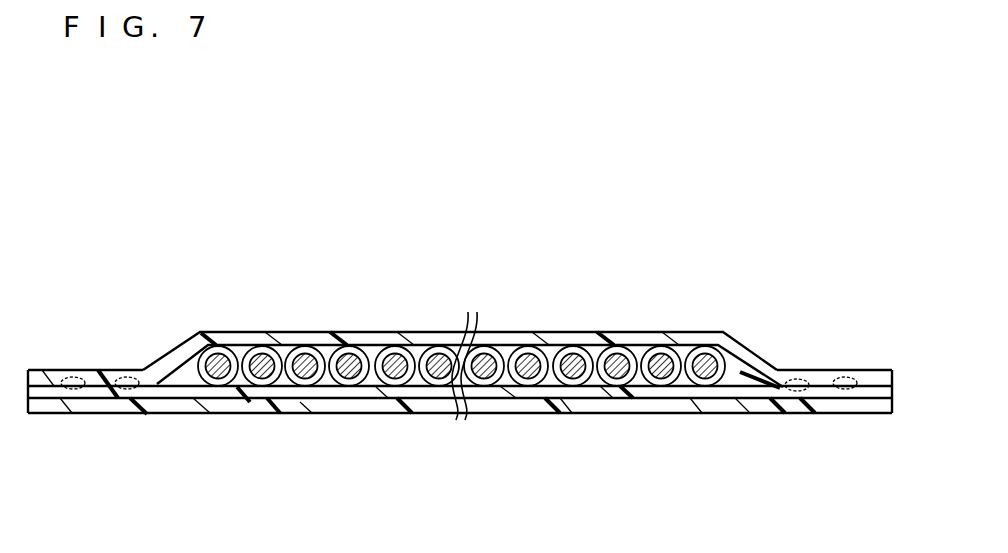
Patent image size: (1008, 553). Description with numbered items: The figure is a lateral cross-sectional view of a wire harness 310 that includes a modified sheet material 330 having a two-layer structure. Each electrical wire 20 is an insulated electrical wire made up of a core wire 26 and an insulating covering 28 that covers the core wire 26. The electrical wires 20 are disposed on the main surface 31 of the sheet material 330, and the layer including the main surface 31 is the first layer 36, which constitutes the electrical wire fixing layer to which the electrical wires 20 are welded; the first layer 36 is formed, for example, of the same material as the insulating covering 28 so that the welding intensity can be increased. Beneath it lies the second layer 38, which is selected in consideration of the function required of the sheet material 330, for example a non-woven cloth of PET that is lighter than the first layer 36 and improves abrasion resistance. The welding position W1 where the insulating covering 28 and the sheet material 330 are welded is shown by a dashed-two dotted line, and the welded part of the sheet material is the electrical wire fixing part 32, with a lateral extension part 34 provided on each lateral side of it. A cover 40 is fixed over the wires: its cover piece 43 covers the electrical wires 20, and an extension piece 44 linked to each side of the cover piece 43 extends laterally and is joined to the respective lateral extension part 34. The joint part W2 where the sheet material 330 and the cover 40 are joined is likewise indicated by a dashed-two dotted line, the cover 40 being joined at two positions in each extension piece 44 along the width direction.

The wire harness 310 is at (208, 163).
The electrical wire 20 is at (273, 283).
The core wire 26 is at (219, 347).
The insulating covering 28 is at (242, 347).
The cover 40 is at (415, 338).
The cover piece 43 is at (689, 338).
The extension piece 44 is at (100, 380).
The lateral extension part 34 is at (43, 413).
The main surface 31 is at (175, 379).
The electrical wire fixing part 32 is at (420, 406).
The first layer 36 is at (542, 405).
The second layer 38 is at (607, 405).
The sheet material 330 is at (631, 465).
The welding position W1 is at (350, 380).
The joint part W2 is at (125, 396).